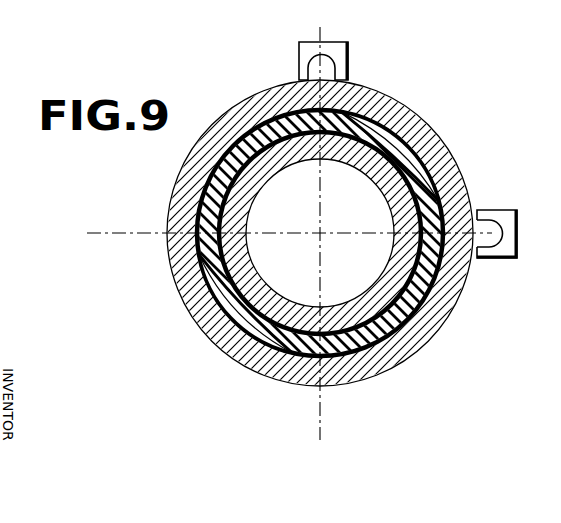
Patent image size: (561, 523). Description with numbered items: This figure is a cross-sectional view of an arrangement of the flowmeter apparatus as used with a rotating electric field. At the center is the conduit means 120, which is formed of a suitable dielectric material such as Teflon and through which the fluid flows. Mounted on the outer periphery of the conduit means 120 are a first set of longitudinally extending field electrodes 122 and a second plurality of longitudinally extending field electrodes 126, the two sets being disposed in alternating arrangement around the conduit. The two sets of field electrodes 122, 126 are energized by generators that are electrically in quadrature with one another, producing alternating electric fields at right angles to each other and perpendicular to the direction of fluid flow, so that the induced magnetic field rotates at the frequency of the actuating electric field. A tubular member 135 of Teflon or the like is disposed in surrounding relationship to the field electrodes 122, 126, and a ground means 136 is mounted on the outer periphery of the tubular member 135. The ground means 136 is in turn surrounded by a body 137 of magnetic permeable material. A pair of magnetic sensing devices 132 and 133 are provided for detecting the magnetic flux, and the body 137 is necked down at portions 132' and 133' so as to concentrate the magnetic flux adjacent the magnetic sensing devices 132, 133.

The conduit means 120 is at (273, 295).
The field electrodes 122 is at (213, 293).
The field electrodes 126 is at (289, 233).
The magnetic sensing device 132 is at (364, 47).
The necked down portion 132' is at (285, 54).
The magnetic sensing device 133 is at (519, 274).
The necked down portion 133' is at (490, 268).
The tubular member 135 is at (362, 105).
The ground means 136 is at (417, 133).
The body of magnetic permeable material 137 is at (354, 372).